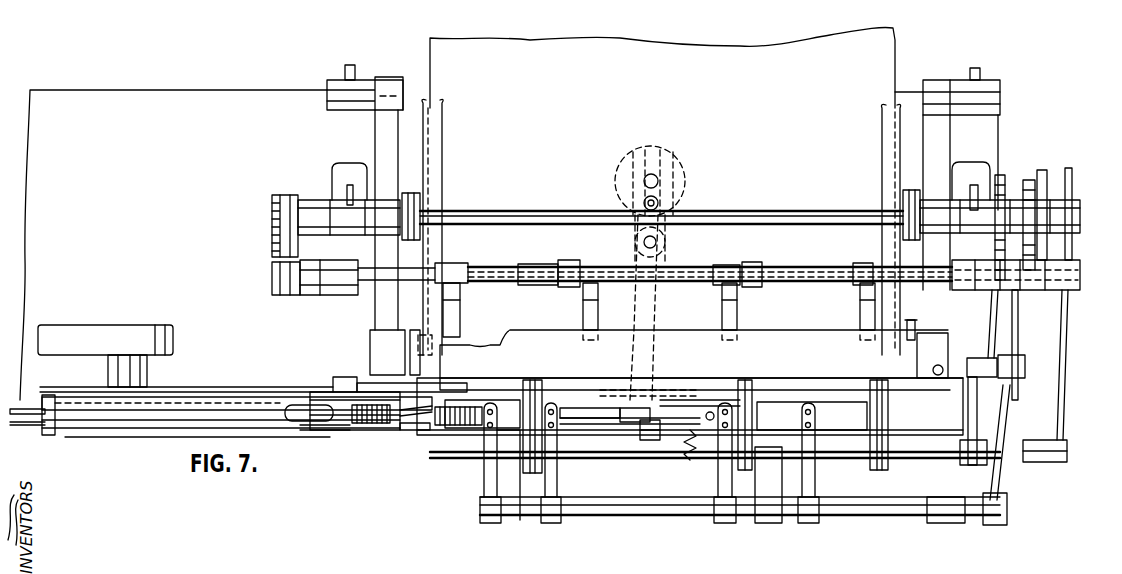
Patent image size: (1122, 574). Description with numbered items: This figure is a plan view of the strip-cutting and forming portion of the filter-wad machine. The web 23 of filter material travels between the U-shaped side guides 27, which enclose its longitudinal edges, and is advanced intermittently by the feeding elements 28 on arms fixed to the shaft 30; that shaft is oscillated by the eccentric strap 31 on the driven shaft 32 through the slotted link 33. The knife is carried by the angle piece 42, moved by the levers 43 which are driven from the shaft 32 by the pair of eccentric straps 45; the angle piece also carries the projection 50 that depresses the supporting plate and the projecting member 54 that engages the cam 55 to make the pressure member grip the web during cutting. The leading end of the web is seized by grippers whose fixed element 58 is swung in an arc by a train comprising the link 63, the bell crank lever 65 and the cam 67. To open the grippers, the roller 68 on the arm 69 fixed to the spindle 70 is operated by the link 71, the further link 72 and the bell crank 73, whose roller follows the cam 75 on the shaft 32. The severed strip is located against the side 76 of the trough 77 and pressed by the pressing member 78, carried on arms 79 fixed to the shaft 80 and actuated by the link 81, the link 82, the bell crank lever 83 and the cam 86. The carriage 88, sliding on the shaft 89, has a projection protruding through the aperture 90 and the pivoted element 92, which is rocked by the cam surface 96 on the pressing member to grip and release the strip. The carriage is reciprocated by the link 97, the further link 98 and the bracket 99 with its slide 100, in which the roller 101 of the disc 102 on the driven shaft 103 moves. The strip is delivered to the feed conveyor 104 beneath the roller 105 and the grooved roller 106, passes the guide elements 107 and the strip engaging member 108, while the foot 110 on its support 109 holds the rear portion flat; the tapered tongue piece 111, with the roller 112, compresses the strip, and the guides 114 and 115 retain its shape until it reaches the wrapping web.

The web 23 is at (675, 55).
The side guides 27 is at (436, 137).
The feeding elements 28 is at (455, 330).
The shaft 30 is at (810, 270).
The eccentric strap 31 is at (272, 215).
The shaft 32 is at (820, 212).
The link 33 is at (272, 270).
The angle piece 42 is at (785, 330).
The levers 43 is at (380, 148).
The eccentric straps 45 is at (420, 198).
The projection 50 is at (938, 375).
The projecting member 54 is at (412, 350).
The cam 55 is at (910, 325).
The fixed element 58 is at (530, 380).
The link 63 is at (1050, 440).
The bell crank lever 65 is at (1062, 376).
The cam 67 is at (1070, 178).
The roller 68 is at (545, 378).
The arm 69 is at (522, 432).
The spindle 70 is at (620, 458).
The link 71 is at (980, 430).
The link 72 is at (976, 358).
The bell crank 73 is at (990, 332).
The cam 75 is at (1000, 180).
The side of trough 76 is at (700, 440).
The trough 77 is at (700, 402).
The pressing member 78 is at (470, 402).
The arms 79 is at (485, 482).
The shaft 80 is at (890, 505).
The link 81 is at (1003, 465).
The link 82 is at (1022, 366).
The bell crank lever 83 is at (1016, 335).
The cam 86 is at (1030, 185).
The carriage 88 is at (660, 398).
The shaft 89 is at (560, 400).
The aperture 90 is at (718, 408).
The element 92 is at (650, 432).
The cam surface 96 is at (622, 428).
The link 97 is at (645, 384).
The link 98 is at (655, 305).
The bracket 99 is at (665, 242).
The slide 100 is at (650, 175).
The roller 101 is at (660, 200).
The disc 102 is at (617, 170).
The shaft 103 is at (660, 178).
The feed conveyor 104 is at (65, 425).
The roller 105 is at (370, 423).
The roller 106 is at (300, 405).
The guide elements 107 is at (400, 430).
The strip engaging member 108 is at (350, 428).
The support 109 is at (455, 405).
The foot 110 is at (420, 403).
The tongue piece 111 is at (210, 410).
The roller 112 is at (155, 405).
The guide 114 is at (35, 425).
The guide 115 is at (22, 410).